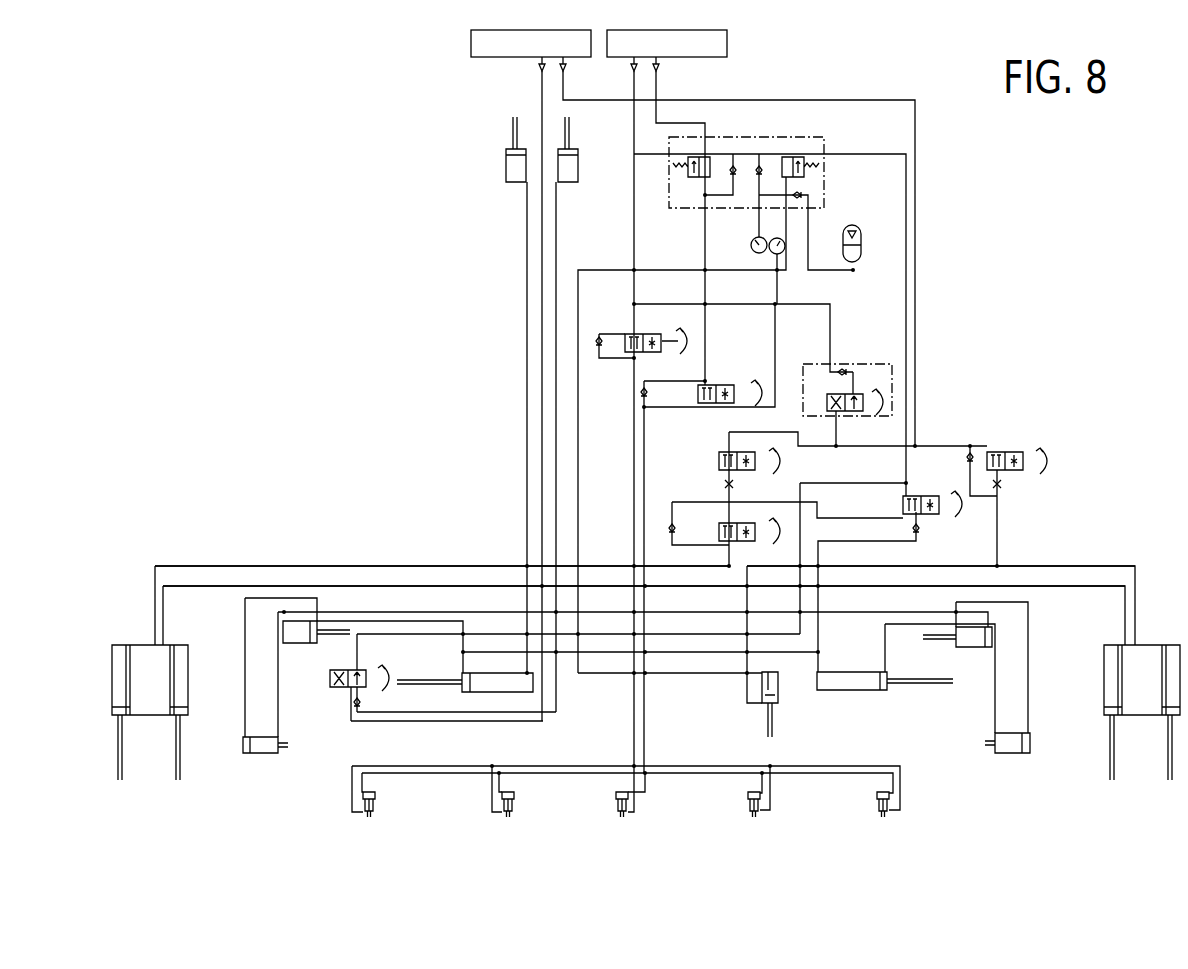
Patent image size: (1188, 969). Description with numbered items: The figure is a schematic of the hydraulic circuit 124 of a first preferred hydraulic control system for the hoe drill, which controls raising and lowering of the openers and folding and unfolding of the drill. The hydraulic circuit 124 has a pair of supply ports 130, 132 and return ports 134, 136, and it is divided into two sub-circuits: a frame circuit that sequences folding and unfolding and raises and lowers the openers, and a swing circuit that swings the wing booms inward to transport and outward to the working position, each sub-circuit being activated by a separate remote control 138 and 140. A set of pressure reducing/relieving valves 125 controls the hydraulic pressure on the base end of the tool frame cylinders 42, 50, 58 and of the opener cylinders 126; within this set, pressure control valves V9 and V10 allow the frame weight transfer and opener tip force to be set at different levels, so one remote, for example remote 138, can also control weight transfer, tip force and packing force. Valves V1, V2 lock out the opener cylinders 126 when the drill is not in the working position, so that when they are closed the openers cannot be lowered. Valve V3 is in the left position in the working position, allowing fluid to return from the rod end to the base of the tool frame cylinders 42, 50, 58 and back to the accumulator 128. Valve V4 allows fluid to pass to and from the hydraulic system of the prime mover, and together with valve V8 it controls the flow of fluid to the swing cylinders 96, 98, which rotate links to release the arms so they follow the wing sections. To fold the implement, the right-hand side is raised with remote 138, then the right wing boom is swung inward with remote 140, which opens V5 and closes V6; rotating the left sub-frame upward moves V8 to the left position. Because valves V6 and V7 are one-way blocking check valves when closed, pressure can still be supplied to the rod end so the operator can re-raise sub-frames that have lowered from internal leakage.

The remote control 140 is at (471, 43).
The remote control 138 is at (728, 45).
The supply port 130 is at (540, 70).
The return port 134 is at (562, 73).
The supply port 132 is at (633, 70).
The return port 136 is at (657, 70).
The swing cylinder 96 is at (511, 172).
The swing cylinder 98 is at (574, 172).
The pressure reducing/relieving valves 125 is at (767, 125).
The accumulator 128 is at (860, 252).
The hydraulic circuit 124 is at (308, 319).
The tool frame cylinder 50 is at (178, 665).
The tool frame cylinder 58 is at (1165, 663).
The tool frame cylinder 42 is at (773, 689).
The opener cylinders 126 is at (877, 807).
The valve V1 is at (656, 333).
The valve V2 is at (730, 384).
The valve V3 is at (847, 379).
The valve V4 is at (932, 493).
The valve V5 is at (737, 461).
The valve V6 is at (1017, 449).
The valve V7 is at (737, 531).
The valve V8 is at (346, 678).
The valve V9 is at (816, 178).
The valve V10 is at (674, 178).